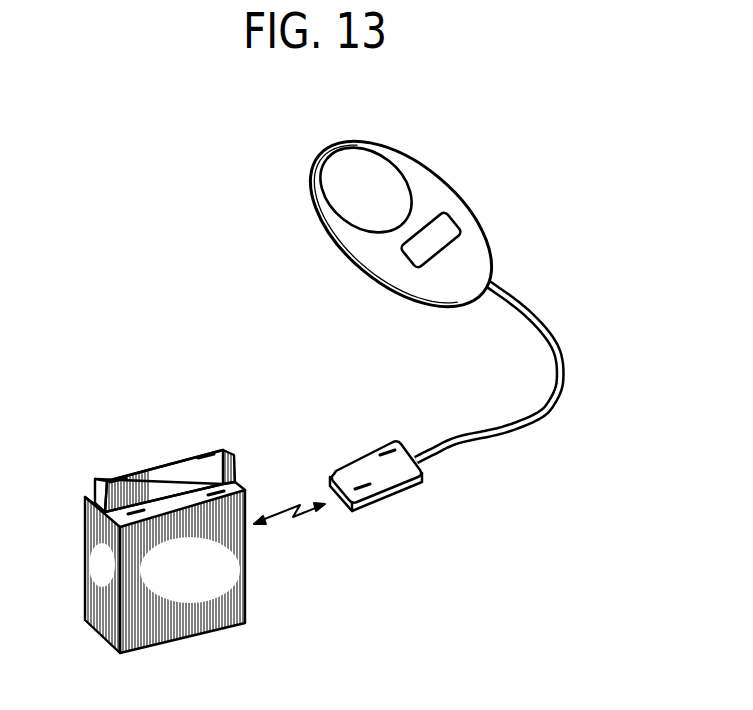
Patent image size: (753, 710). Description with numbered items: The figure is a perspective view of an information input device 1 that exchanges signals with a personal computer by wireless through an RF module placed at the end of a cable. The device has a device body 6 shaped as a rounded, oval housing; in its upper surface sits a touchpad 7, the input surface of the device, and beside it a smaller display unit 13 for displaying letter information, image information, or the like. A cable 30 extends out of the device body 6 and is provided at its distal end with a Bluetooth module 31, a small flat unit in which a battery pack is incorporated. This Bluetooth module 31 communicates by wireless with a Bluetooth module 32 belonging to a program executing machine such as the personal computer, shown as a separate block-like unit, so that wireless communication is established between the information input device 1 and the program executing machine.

The information input device 1 is at (420, 262).
The device body 6 is at (376, 242).
The touchpad 7 is at (385, 167).
The display unit 13 is at (457, 220).
The cable 30 is at (462, 425).
The Bluetooth module 31 is at (373, 463).
The Bluetooth module 32 is at (188, 475).